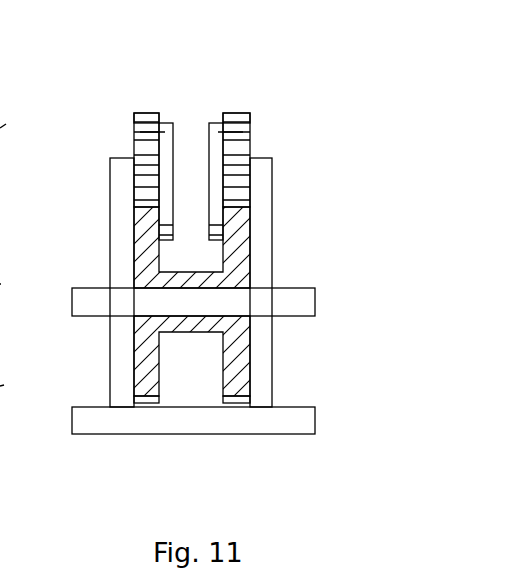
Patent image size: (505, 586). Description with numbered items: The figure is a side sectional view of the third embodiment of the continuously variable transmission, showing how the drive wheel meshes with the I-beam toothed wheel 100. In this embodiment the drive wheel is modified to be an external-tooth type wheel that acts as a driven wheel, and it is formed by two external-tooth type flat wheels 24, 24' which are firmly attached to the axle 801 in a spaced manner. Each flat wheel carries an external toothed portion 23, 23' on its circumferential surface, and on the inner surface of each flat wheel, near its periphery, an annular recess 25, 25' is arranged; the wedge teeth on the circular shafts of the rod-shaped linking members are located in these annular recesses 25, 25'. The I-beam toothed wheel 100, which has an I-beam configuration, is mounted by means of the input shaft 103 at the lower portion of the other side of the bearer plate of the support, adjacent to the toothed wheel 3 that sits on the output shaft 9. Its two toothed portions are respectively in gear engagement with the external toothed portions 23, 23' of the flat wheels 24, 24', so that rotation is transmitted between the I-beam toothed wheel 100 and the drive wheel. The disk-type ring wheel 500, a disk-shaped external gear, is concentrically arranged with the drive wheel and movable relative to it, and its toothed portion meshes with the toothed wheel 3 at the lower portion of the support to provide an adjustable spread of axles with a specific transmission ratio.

The disk-type ring wheel 500 is at (13, 118).
The toothed wheel 3 is at (8, 389).
The output shaft 9 is at (2, 285).
The external toothed portion 23 is at (96, 144).
The external-tooth type flat wheel 24 is at (146, 78).
The annular recess 25 is at (123, 146).
The external toothed portion 23' is at (273, 151).
The external-tooth type flat wheel 24' is at (255, 82).
The annular recess 25' is at (217, 139).
The axle 801 is at (135, 183).
The input shaft 103 is at (95, 298).
The I-beam toothed wheel 100 is at (150, 373).